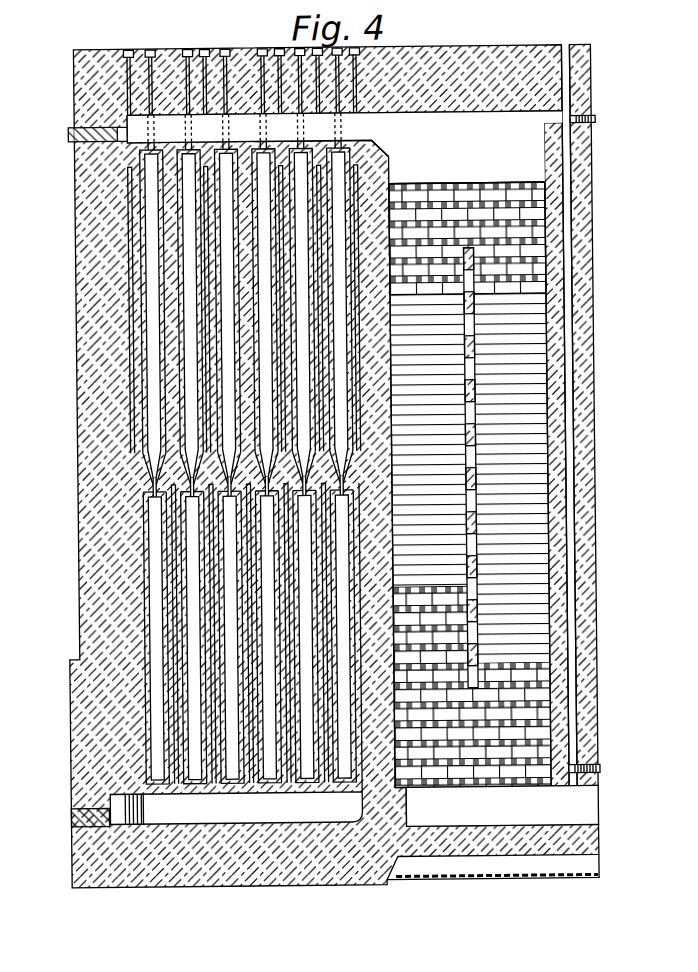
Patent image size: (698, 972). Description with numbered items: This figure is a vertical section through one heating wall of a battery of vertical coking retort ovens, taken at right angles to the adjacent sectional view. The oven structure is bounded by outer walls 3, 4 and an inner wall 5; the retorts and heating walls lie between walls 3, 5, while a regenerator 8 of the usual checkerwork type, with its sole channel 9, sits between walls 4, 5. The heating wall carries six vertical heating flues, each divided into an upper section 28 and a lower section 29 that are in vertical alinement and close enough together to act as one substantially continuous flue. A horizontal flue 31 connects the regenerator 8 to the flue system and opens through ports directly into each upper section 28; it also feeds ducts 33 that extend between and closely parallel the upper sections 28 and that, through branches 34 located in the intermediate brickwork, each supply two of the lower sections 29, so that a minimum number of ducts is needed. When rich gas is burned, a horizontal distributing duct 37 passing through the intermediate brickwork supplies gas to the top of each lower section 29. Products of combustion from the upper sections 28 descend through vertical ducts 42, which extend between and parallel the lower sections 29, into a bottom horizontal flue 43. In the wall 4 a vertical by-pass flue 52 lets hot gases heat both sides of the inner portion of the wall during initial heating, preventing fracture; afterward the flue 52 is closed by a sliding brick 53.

The outer wall 3 is at (82, 289).
The outer wall 4 is at (598, 343).
The inner wall 5 is at (393, 177).
The regenerator 8 is at (540, 529).
The sole channel 9 is at (580, 804).
The upper section 28 is at (152, 213).
The lower section 29 is at (147, 566).
The horizontal flue 31 is at (171, 127).
The duct 33 is at (173, 374).
The branch 34 is at (150, 488).
The horizontal distributing duct 37 is at (367, 457).
The vertical duct 42 is at (171, 630).
The bottom horizontal flue 43 is at (224, 809).
The by-pass flue 52 is at (573, 274).
The sliding brick 53 is at (591, 119).